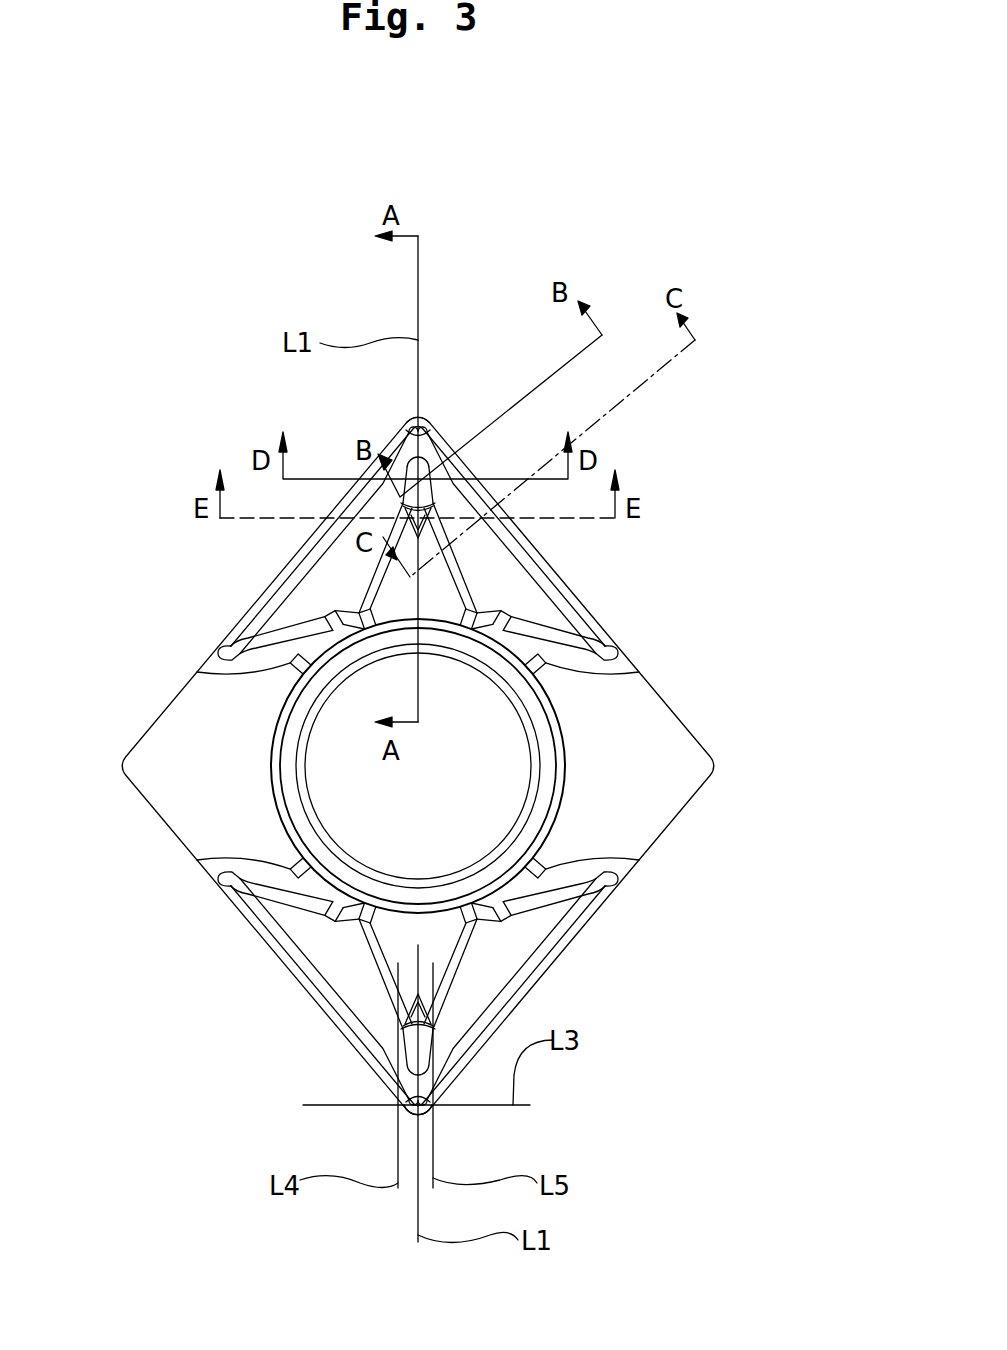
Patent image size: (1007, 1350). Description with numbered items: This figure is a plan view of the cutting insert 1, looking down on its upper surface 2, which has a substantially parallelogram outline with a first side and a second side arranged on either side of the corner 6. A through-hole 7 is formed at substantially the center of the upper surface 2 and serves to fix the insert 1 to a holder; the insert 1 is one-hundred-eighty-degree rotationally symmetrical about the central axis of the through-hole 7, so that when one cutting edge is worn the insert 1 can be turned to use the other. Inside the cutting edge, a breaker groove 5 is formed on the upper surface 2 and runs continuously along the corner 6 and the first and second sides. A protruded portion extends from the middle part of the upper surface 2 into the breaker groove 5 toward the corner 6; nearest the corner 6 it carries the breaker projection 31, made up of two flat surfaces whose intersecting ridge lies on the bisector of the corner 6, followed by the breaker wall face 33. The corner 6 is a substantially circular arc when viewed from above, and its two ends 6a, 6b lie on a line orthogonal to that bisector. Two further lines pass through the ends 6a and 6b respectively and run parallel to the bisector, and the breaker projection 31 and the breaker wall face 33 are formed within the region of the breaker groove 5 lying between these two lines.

The cutting insert 1 is at (141, 698).
The upper surface 2 is at (182, 770).
The breaker groove 5 is at (487, 962).
The corner 6 is at (417, 417).
The end of the corner 6a is at (399, 1107).
The end of the corner 6b is at (435, 1107).
The through-hole 7 is at (462, 750).
The breaker projection 31 is at (410, 1048).
The breaker wall face 33 is at (405, 1012).